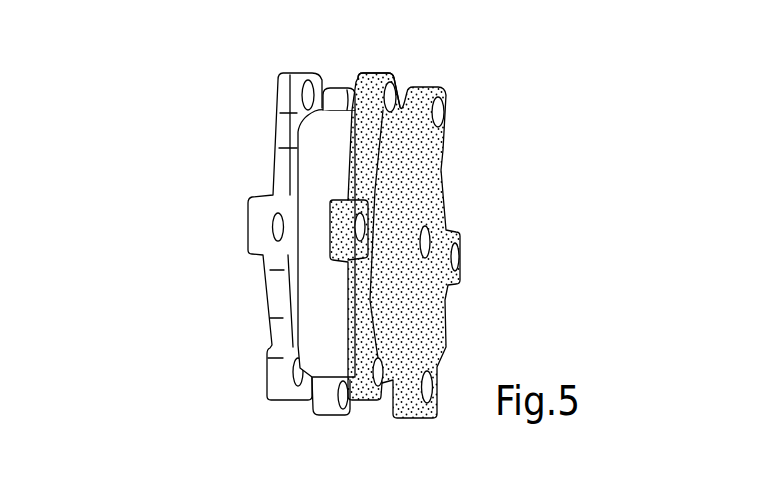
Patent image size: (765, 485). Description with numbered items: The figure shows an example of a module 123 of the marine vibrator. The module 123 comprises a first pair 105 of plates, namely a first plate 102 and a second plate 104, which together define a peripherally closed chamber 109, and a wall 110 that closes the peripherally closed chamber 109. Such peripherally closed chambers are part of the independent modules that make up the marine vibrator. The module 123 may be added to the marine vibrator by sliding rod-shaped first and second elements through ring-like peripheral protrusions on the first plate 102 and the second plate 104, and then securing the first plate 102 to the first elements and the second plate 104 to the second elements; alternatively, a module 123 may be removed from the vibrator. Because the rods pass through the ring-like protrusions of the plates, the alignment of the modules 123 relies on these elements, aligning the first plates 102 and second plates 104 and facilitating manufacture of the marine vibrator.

The first plate 102 is at (270, 306).
The second plate 104 is at (408, 303).
The first pair of plates 105 is at (122, 350).
The peripherally closed chamber 109 is at (325, 160).
The wall 110 is at (313, 278).
The module 123 is at (224, 165).